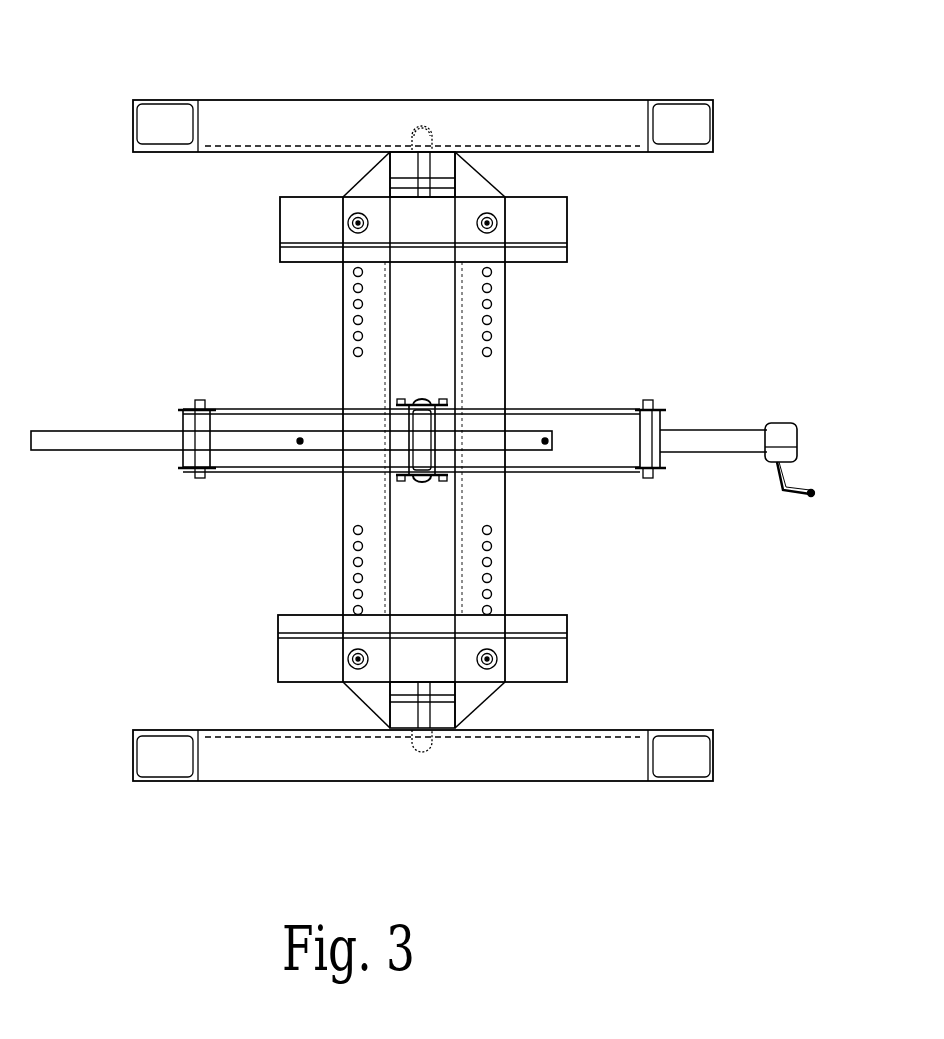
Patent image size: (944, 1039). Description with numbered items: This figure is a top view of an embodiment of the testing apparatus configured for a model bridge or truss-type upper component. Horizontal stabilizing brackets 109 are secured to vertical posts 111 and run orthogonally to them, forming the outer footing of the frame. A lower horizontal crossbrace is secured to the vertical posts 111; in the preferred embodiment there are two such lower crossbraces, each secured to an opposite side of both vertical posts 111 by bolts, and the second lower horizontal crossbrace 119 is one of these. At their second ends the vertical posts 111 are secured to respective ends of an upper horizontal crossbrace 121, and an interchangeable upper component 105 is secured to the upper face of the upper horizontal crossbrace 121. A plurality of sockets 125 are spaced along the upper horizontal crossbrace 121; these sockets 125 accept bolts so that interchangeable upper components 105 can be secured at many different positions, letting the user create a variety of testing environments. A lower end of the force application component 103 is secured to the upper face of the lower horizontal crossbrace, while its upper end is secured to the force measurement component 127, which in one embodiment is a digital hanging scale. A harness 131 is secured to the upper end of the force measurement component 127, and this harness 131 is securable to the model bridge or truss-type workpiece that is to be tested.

The force application component 103 is at (655, 408).
The interchangeable upper component 105 is at (568, 262).
The horizontal stabilizing bracket 109 is at (600, 781).
The vertical post 111 is at (416, 151).
The second lower horizontal crossbrace 119 is at (582, 101).
The upper horizontal crossbrace 121 is at (493, 372).
The sockets 125 is at (345, 286).
The force measurement component 127 is at (408, 418).
The harness 131 is at (298, 436).